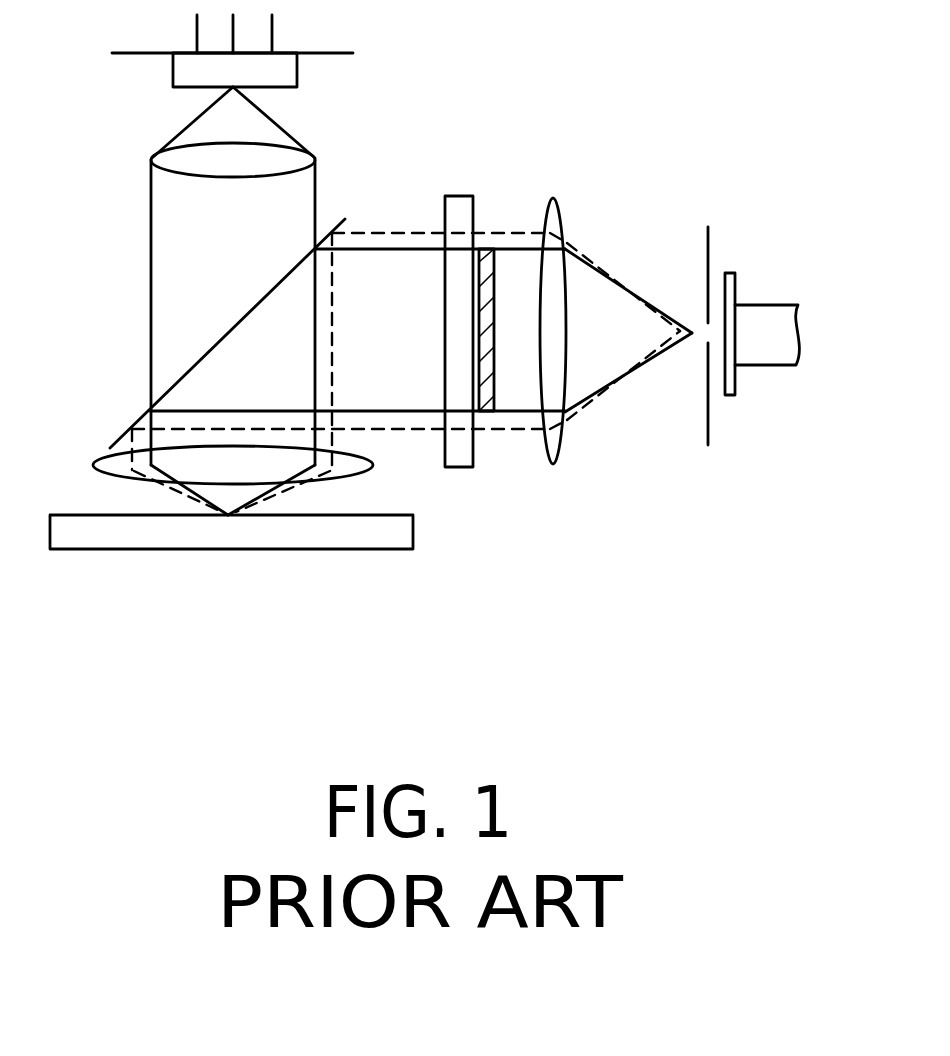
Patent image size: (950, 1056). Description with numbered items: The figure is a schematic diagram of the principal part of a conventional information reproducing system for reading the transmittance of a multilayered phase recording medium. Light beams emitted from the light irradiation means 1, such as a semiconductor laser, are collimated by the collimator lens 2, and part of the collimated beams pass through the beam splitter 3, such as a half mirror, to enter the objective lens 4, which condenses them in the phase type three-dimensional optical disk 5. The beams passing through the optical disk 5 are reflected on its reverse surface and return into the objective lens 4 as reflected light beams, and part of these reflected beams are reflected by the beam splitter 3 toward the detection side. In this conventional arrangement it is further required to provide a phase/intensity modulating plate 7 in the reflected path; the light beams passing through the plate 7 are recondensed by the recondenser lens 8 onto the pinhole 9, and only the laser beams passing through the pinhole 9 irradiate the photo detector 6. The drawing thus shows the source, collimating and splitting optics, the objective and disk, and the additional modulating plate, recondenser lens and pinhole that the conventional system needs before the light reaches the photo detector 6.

The light irradiation means 1 is at (297, 80).
The collimator lens 2 is at (315, 157).
The beam splitter 3 is at (118, 436).
The objective lens 4 is at (372, 465).
The phase type three-dimensional optical disk 5 is at (413, 533).
The photo detector 6 is at (778, 303).
The phase/intensity modulating plate 7 is at (462, 196).
The recondenser lens 8 is at (553, 198).
The pinhole 9 is at (712, 228).